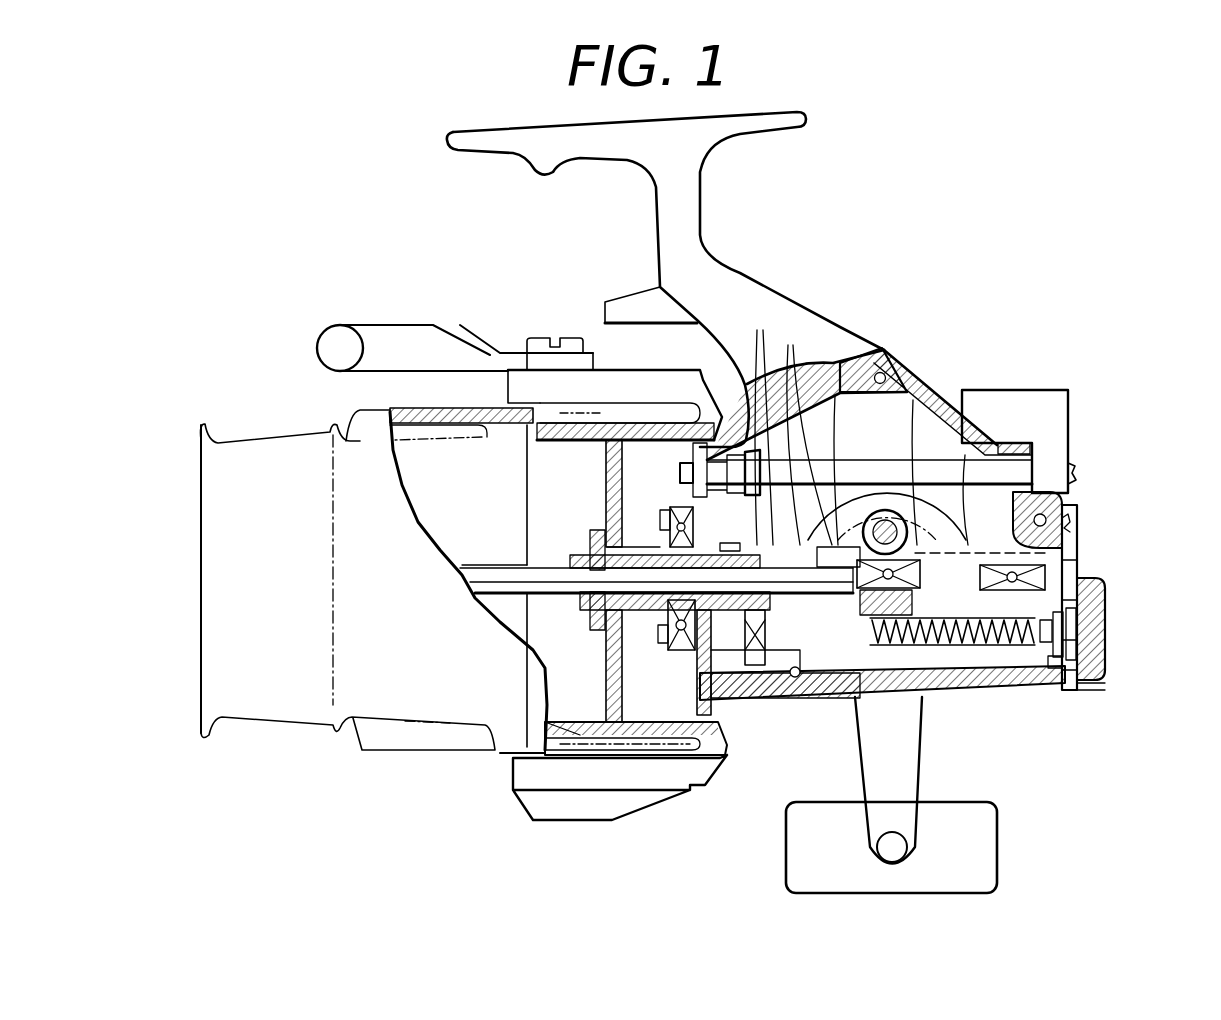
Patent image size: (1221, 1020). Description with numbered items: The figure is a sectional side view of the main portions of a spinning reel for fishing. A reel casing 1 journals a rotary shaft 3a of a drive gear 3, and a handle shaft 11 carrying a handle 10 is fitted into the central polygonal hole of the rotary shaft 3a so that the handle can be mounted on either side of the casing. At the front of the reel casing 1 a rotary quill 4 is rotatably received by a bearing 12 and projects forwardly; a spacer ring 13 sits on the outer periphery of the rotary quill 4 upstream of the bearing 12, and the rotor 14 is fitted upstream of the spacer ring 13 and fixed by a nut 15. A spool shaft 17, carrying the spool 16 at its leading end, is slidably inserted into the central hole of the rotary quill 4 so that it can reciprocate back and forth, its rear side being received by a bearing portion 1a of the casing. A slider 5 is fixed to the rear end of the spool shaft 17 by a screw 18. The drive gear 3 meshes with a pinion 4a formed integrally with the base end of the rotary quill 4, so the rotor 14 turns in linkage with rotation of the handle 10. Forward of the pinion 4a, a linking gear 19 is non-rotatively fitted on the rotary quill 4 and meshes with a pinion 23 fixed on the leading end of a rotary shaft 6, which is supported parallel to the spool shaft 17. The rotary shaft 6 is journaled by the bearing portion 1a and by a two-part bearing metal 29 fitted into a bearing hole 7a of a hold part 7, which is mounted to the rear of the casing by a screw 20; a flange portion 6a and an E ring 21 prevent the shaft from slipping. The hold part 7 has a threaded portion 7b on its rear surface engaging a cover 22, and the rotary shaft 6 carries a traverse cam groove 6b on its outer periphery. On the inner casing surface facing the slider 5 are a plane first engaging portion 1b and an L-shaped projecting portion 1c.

The reel casing 1 is at (882, 340).
The bearing portion 1a is at (869, 350).
The first engaging portion 1b is at (1090, 572).
The L-shaped projecting portion 1c is at (1000, 500).
The drive gear 3 is at (895, 397).
The rotary shaft 3a is at (890, 510).
The rotary quill 4 is at (578, 608).
The pinion 4a is at (797, 373).
The slider 5 is at (846, 699).
The rotary shaft 6 is at (1022, 654).
The flange portion 6a is at (1105, 659).
The traverse cam groove 6b is at (992, 661).
The hold part 7 is at (1088, 547).
The bearing hole 7a is at (1100, 641).
The threaded portion 7b is at (1095, 691).
The handle 10 is at (921, 748).
The handle shaft 11 is at (918, 507).
The bearing 12 is at (685, 661).
The spacer ring 13 is at (656, 616).
The rotor 14 is at (717, 771).
The nut 15 is at (593, 631).
The spool 16 is at (200, 428).
The spool shaft 17 is at (495, 590).
The screw 18 is at (962, 520).
The linking gear 19 is at (762, 365).
The screw 20 is at (1072, 520).
The E ring 21 is at (1048, 661).
The cover 22 is at (1100, 625).
The pinion 23 is at (747, 691).
The two-part bearing metal 29 is at (1075, 677).